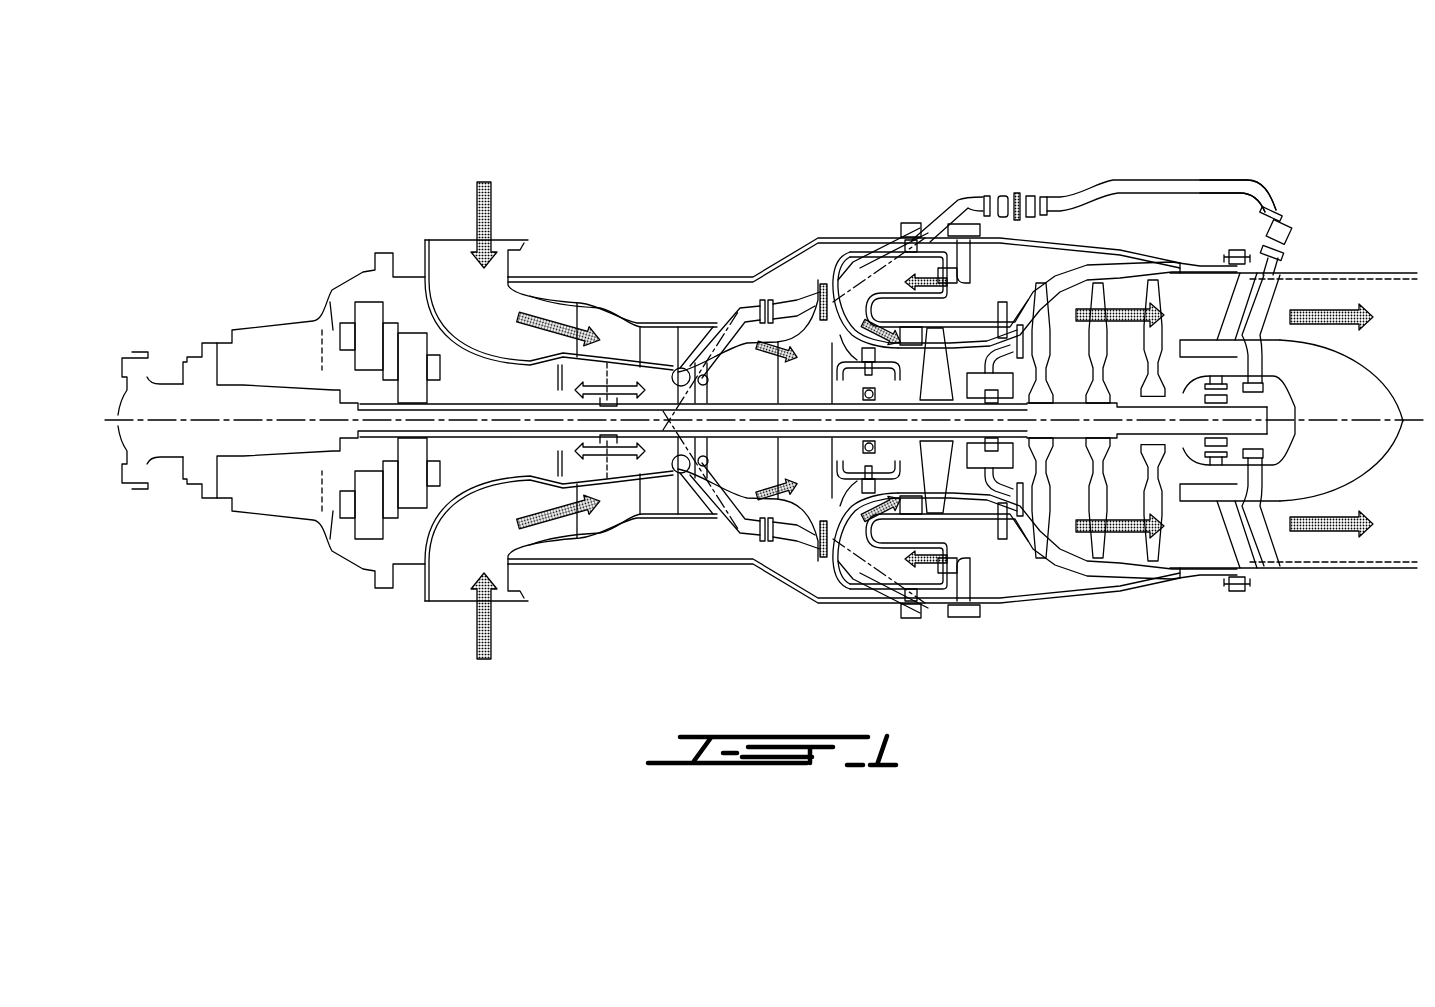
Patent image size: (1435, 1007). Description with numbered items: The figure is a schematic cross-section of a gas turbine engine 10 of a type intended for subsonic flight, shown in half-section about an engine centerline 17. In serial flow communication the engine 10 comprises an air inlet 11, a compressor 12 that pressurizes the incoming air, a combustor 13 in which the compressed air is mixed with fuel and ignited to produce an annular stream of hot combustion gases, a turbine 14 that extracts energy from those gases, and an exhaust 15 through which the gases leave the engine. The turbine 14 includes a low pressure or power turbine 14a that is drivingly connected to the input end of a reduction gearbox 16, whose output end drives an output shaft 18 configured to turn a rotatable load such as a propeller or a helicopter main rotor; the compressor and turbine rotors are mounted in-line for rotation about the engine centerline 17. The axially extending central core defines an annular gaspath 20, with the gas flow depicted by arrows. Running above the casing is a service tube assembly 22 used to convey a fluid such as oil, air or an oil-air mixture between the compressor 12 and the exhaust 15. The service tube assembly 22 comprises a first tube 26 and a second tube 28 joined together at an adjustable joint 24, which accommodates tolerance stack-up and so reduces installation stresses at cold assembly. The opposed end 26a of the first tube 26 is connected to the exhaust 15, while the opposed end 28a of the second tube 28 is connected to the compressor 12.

The gas turbine engine 10 is at (753, 365).
The air inlet 11 is at (457, 260).
The compressor 12 is at (640, 533).
The combustor 13 is at (892, 573).
The turbine 14 is at (1057, 570).
The power turbine 14a is at (1098, 552).
The exhaust 15 is at (1300, 550).
The reduction gearbox 16 is at (365, 553).
The engine centerline 17 is at (115, 413).
The output shaft 18 is at (165, 440).
The annular gaspath 20 is at (660, 503).
The service tube assembly 22 is at (1158, 163).
The adjustable joint 24 is at (1018, 183).
The first tube 26 is at (1220, 180).
The end of first tube 26a is at (1303, 237).
The second tube 28 is at (962, 204).
The end of second tube 28a is at (700, 472).